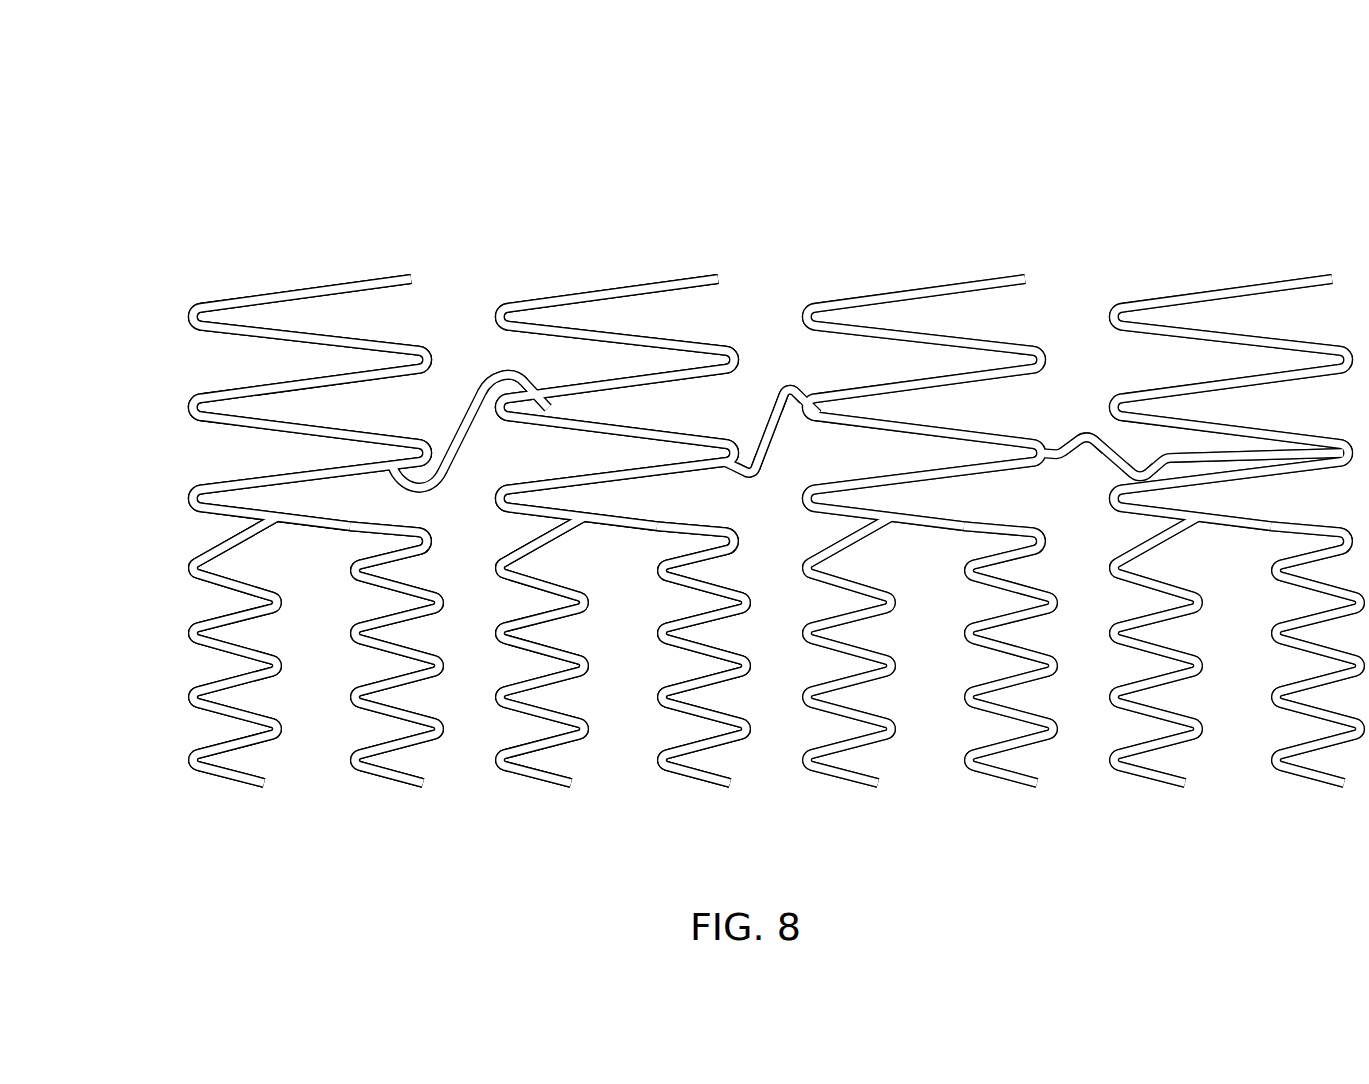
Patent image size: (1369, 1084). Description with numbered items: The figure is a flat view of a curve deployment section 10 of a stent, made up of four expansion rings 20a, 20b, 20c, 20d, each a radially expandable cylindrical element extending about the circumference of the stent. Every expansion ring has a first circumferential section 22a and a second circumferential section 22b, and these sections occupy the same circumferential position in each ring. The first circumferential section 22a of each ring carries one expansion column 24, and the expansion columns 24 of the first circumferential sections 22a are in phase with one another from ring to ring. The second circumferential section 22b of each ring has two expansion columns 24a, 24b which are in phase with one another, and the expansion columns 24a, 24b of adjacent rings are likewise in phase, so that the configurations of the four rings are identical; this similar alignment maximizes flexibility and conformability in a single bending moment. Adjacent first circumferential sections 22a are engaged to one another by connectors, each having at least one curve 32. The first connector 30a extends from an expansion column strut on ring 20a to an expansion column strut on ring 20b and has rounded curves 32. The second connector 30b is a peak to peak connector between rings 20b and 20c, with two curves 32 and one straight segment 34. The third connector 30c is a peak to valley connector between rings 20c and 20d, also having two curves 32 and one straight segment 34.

The curve deployment section 10 is at (181, 233).
The expansion ring 20a is at (428, 173).
The expansion ring 20b is at (735, 173).
The expansion ring 20c is at (1042, 173).
The expansion ring 20d is at (1349, 173).
The first circumferential section 22a is at (178, 276).
The second circumferential section 22b is at (178, 520).
The expansion column 24 is at (285, 273).
The expansion column 24a is at (220, 792).
The expansion column 24b is at (385, 792).
The first connector 30a is at (464, 418).
The second connector 30b is at (771, 417).
The third connector 30c is at (1105, 459).
The curve 32 is at (490, 367).
The straight segment 34 is at (776, 439).